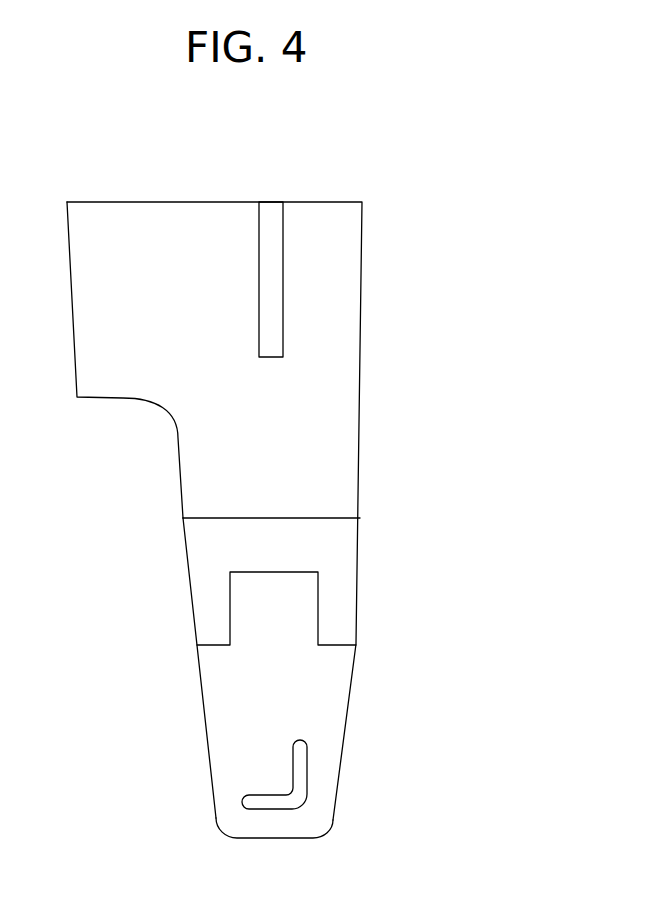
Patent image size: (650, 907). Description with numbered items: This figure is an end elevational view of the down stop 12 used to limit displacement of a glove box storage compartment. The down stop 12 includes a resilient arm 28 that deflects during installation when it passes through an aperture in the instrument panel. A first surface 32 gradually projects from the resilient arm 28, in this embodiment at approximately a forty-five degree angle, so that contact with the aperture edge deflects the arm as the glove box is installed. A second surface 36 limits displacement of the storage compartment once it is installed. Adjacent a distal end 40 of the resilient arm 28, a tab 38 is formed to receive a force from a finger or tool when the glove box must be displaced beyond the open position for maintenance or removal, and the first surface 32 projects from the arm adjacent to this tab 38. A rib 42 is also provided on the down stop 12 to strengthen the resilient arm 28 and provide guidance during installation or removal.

The down stop 12 is at (383, 370).
The resilient arm 28 is at (184, 553).
The first surface 32 is at (358, 572).
The second surface 36 is at (327, 518).
The tab 38 is at (307, 766).
The distal end 40 is at (333, 826).
The rib 42 is at (283, 247).